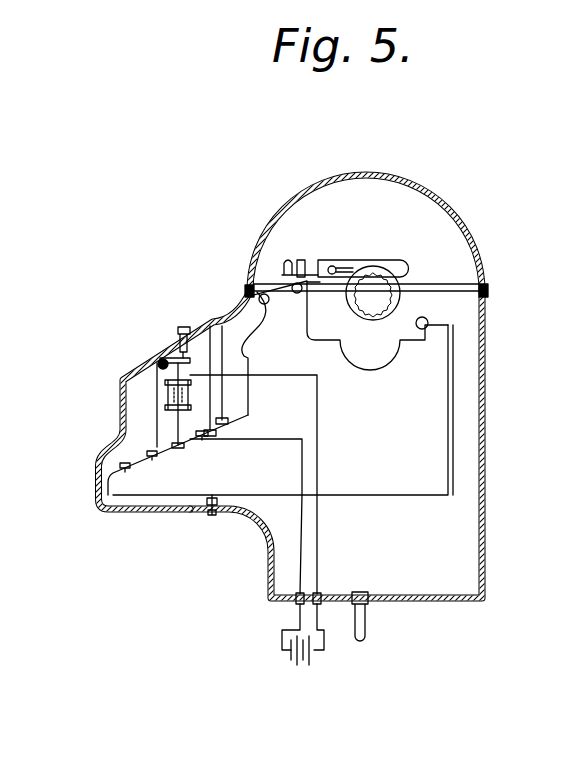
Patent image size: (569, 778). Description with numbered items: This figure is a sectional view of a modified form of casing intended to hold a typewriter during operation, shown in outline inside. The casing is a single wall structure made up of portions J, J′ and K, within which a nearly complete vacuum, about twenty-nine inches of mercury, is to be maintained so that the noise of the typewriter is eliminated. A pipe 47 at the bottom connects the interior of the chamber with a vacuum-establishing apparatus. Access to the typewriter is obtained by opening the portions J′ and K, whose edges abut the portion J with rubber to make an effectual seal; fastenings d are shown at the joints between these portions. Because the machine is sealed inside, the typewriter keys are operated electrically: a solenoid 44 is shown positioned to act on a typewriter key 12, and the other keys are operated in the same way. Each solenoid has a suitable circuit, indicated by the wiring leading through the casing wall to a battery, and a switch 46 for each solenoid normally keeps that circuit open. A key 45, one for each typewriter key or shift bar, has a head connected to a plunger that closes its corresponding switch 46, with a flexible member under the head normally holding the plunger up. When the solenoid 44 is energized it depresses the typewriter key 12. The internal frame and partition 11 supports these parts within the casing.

The casing portion J' is at (368, 221).
The casing portion J is at (359, 444).
The casing portion K is at (120, 413).
The fastening bolts d is at (488, 289).
The partition plate 11 is at (434, 448).
The key 12 is at (160, 445).
The solenoid 44 is at (167, 395).
The key 45 is at (184, 326).
The switch 46 is at (170, 360).
The pipe 47 is at (368, 628).